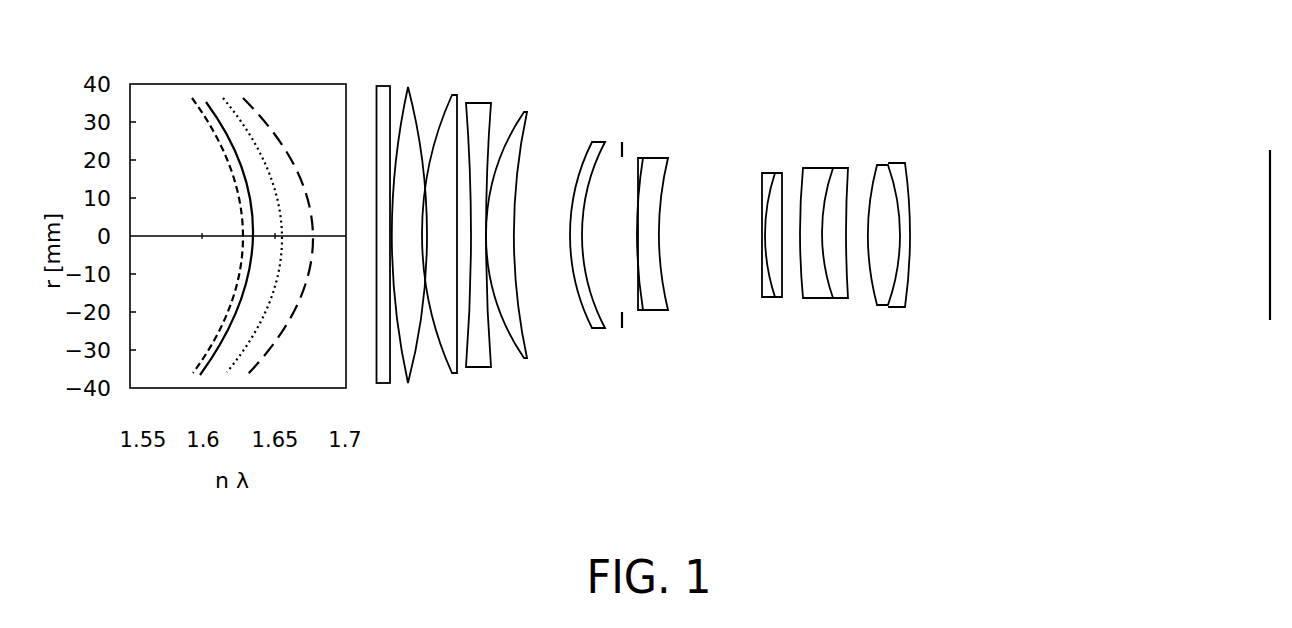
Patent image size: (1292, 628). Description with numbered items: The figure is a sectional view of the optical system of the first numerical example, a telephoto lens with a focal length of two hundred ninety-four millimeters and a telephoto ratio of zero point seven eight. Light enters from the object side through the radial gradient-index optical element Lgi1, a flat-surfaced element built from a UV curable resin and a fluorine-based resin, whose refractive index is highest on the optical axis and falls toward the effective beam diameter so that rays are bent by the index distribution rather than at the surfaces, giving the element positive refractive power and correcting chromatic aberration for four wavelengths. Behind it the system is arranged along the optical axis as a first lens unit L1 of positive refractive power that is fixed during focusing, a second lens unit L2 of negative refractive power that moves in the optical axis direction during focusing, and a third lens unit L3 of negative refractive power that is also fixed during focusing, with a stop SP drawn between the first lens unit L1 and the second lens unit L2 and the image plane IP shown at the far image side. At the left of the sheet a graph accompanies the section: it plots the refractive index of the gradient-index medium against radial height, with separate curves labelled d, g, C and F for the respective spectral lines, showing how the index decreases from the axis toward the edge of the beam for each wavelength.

The radial gradient-index optical element Lgi1 is at (390, 86).
The first lens unit L1 is at (613, 409).
The second lens unit L2 is at (635, 409).
The third lens unit L3 is at (763, 409).
The aperture stop SP is at (626, 218).
The image plane IP is at (1270, 217).
The refractive index curve for d-line d is at (206, 101).
The refractive index curve for g-line g is at (278, 235).
The refractive index curve for C-line C is at (208, 242).
The refractive index curve for F-line F is at (226, 367).